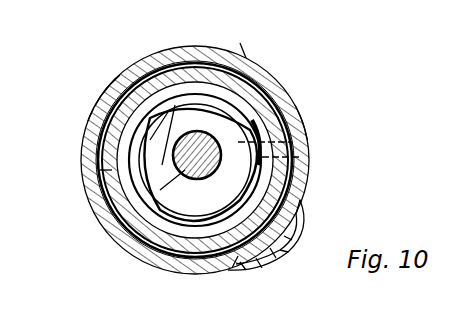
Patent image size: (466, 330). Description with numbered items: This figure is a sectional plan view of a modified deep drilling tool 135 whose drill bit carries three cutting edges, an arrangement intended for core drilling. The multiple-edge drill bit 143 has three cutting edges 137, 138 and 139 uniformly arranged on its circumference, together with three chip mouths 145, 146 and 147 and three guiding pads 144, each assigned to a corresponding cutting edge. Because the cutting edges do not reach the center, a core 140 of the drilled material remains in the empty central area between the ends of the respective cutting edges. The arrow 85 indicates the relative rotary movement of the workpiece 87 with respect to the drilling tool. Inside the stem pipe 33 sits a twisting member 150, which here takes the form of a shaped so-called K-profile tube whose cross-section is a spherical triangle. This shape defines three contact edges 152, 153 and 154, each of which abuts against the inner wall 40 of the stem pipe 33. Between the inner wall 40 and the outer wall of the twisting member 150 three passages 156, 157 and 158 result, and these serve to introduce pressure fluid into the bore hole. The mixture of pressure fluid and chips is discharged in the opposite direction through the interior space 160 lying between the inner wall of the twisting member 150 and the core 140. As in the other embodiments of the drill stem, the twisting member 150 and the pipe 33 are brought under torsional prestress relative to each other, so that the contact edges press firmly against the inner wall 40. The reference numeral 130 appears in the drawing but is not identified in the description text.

The pipe 33 is at (268, 112).
The inner wall 40 is at (280, 215).
The arrow 85 is at (112, 62).
The workpiece 87 is at (249, 63).
The rotor body 130 is at (100, 160).
The deep drilling tool 135 is at (310, 98).
The cutting edge 137 is at (298, 161).
The cutting edge 138 is at (117, 254).
The cutting edge 139 is at (150, 70).
The core 140 is at (108, 222).
The multiple-edge drill bit 143 is at (213, 60).
The guiding pad 144 is at (241, 45).
The chip mouth 145 is at (272, 246).
The chip mouth 146 is at (100, 141).
The chip mouth 147 is at (262, 103).
The twisting member 150 is at (300, 170).
The contact edge 152 is at (270, 118).
The contact edge 153 is at (196, 274).
The contact edge 154 is at (106, 123).
The passage 156 is at (292, 191).
The passage 157 is at (115, 195).
The passage 158 is at (185, 62).
The interior space 160 is at (112, 234).